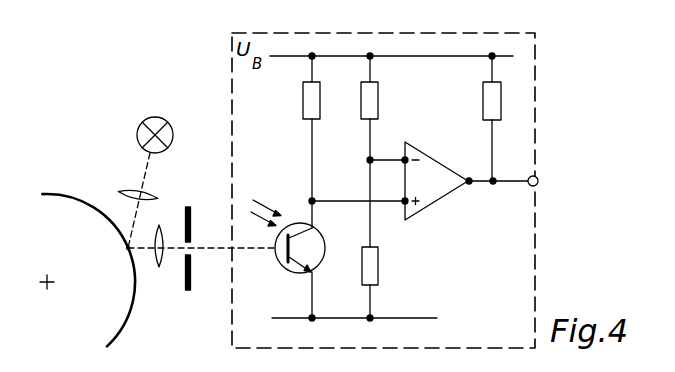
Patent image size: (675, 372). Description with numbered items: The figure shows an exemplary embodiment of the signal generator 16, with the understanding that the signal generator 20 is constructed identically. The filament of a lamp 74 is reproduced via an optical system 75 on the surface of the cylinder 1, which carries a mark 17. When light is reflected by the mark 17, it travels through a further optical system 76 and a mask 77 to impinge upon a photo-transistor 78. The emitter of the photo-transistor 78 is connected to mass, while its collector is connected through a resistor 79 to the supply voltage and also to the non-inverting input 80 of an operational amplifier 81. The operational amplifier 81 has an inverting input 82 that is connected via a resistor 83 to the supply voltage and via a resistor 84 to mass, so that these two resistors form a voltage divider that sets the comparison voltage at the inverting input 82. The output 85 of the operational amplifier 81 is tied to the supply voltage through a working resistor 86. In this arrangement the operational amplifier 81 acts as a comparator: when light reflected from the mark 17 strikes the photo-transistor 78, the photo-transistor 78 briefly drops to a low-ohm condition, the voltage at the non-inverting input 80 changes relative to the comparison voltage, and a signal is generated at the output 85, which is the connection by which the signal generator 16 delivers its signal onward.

The cylinder 1 is at (75, 223).
The mark 17 is at (130, 250).
The lamp 74 is at (157, 122).
The optical system 75 is at (147, 196).
The further optical system 76 is at (163, 258).
The mask 77 is at (192, 260).
The photo-transistor 78 is at (297, 232).
The resistor 79 is at (314, 100).
The non-inverting input 80 is at (403, 203).
The operational amplifier 81 is at (437, 197).
The inverting input 82 is at (403, 156).
The resistor 83 is at (371, 100).
The resistor 84 is at (378, 265).
The output 85 is at (540, 177).
The working resistor 86 is at (492, 100).
The signal generator 16 is at (421, 190).
The signal generator 20 is at (507, 257).